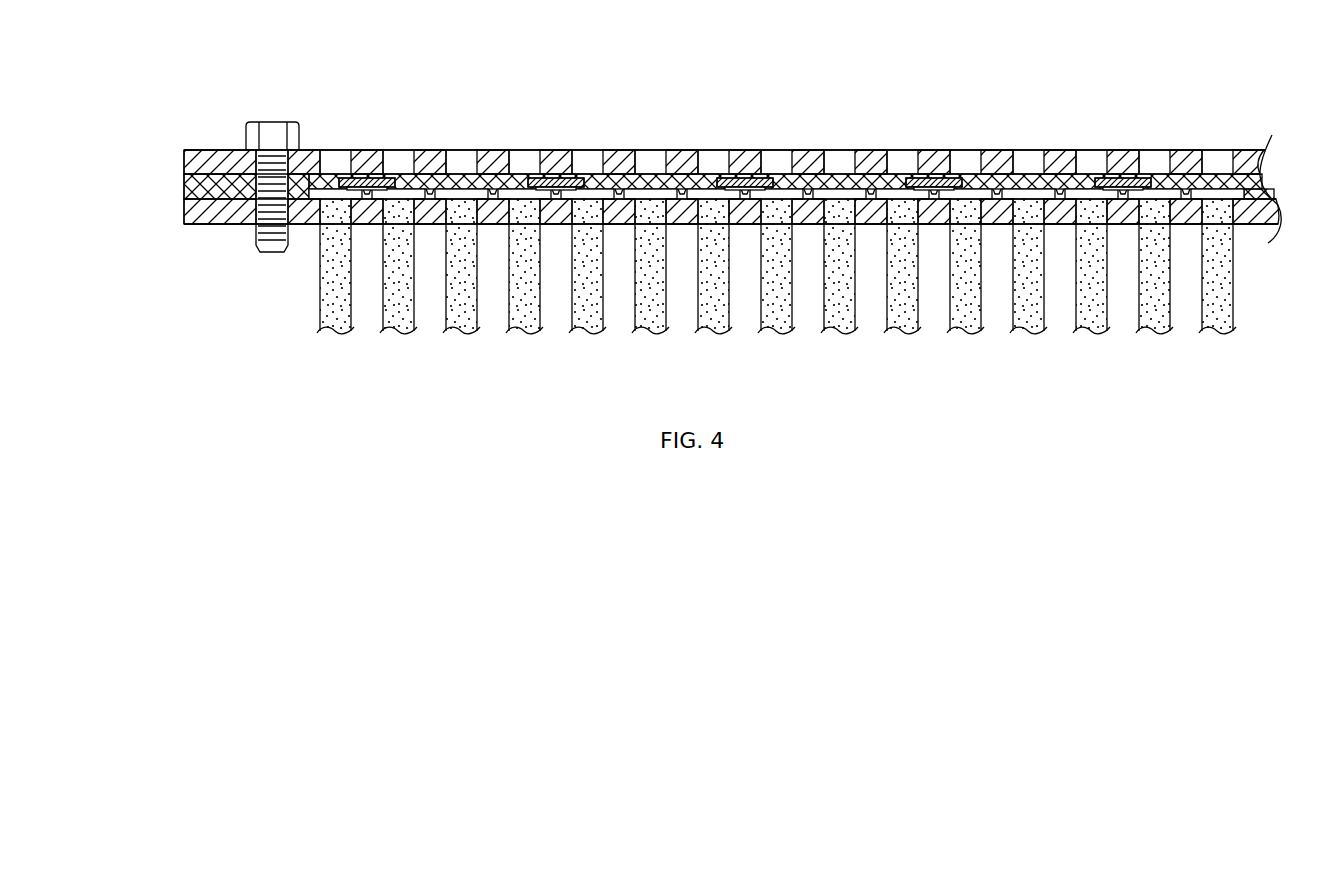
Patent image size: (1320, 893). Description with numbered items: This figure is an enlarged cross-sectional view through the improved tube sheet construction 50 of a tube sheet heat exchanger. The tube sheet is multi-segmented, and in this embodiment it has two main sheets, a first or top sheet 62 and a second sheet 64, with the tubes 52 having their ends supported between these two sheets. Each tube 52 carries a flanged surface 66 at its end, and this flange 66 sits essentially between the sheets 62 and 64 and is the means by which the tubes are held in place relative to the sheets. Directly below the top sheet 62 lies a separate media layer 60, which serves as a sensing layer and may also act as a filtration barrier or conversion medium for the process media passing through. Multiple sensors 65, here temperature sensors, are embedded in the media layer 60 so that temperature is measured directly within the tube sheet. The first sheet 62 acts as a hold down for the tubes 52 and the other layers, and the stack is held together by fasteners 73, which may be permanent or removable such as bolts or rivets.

The tube assembly 50 is at (853, 131).
The tubes 52 is at (526, 316).
The media layer 60 is at (172, 184).
The first sheet 62 is at (205, 138).
The second sheet 64 is at (221, 233).
The sensors 65 is at (742, 183).
The flanged surface 66 is at (396, 190).
The fasteners 73 is at (271, 128).